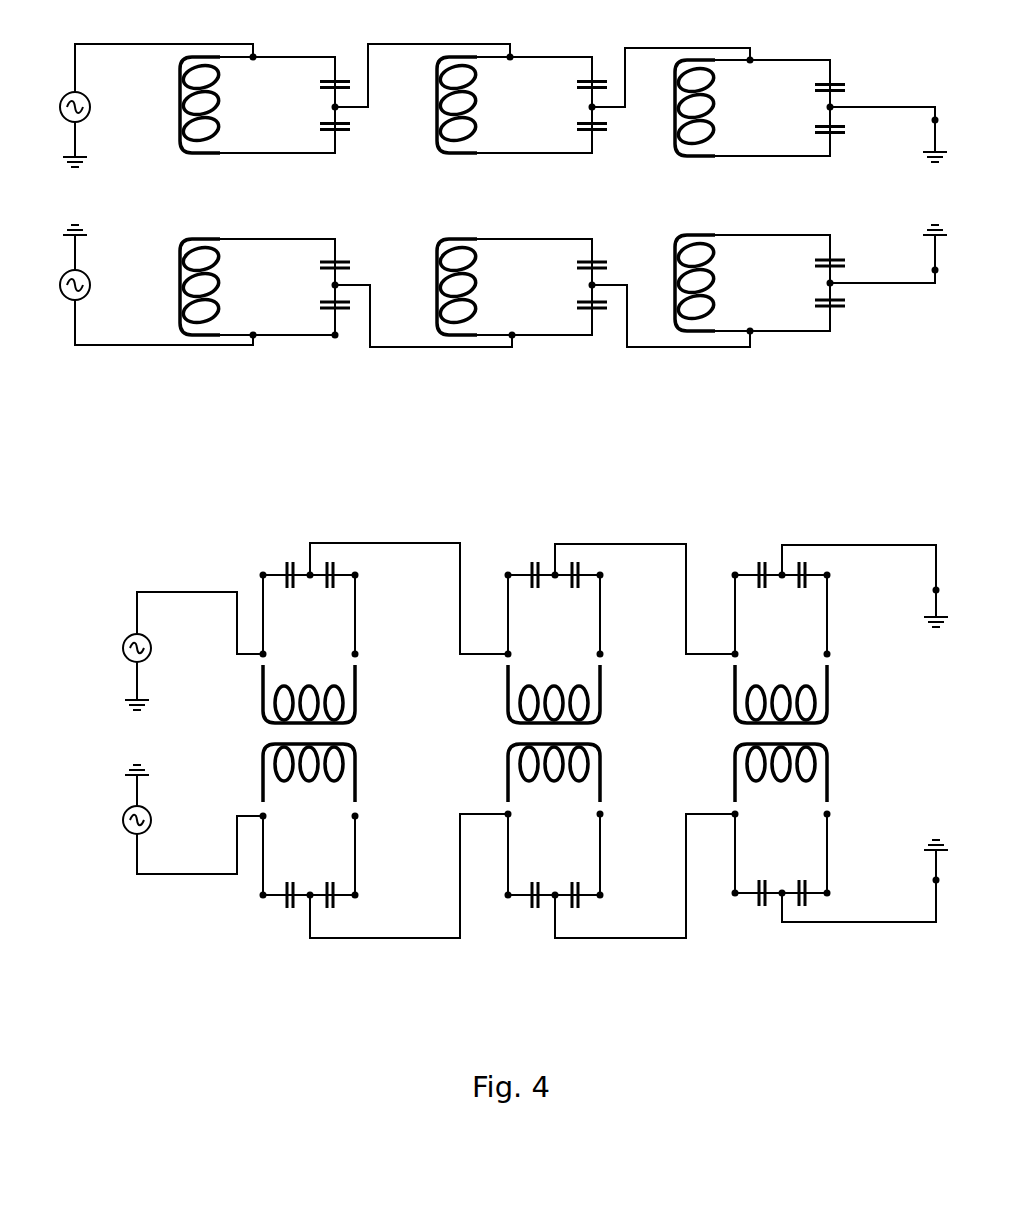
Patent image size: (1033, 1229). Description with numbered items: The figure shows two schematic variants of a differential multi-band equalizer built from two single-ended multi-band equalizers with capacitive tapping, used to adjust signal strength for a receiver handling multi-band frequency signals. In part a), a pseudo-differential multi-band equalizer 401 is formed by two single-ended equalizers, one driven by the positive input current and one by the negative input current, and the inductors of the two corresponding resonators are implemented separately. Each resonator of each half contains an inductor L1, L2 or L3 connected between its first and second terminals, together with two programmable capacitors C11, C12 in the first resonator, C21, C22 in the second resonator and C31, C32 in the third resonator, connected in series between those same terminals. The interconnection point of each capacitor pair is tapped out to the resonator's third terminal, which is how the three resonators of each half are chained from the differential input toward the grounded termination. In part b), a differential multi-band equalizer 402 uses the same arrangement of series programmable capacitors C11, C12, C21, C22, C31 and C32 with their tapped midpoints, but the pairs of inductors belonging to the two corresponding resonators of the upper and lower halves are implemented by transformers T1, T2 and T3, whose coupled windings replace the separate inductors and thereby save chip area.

The pseudo-differential multi-band equalizer 401 is at (333, 387).
The differential multi-band equalizer 402 is at (372, 980).
The inductor L1 is at (188, 196).
The inductor L2 is at (445, 196).
The inductor L3 is at (683, 195).
The transformer T1 is at (309, 733).
The transformer T2 is at (554, 733).
The transformer T3 is at (781, 733).
The programmable capacitor C11 is at (314, 492).
The programmable capacitor C12 is at (319, 513).
The programmable capacitor C21 is at (565, 492).
The programmable capacitor C22 is at (576, 513).
The programmable capacitor C31 is at (798, 493).
The programmable capacitor C32 is at (814, 514).